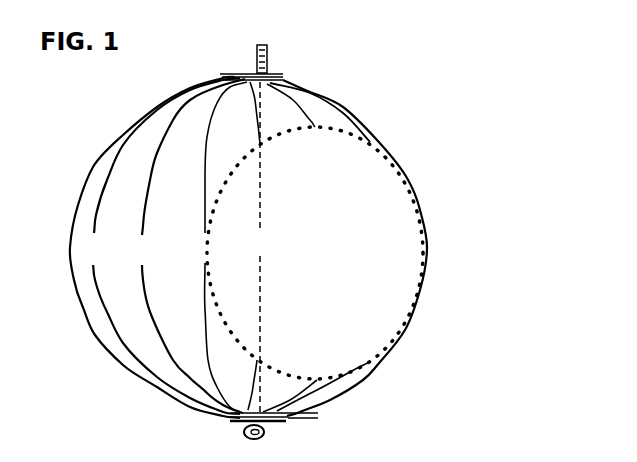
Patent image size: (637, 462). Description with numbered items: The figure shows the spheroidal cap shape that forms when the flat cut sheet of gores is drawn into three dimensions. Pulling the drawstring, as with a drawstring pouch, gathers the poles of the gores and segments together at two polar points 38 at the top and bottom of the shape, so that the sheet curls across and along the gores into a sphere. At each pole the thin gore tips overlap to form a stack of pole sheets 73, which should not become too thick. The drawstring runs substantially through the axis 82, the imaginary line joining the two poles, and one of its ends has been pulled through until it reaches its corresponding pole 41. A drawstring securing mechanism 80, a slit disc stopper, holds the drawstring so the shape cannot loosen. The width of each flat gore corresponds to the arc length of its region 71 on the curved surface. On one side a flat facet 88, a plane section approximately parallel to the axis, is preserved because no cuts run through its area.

The polar points 38 is at (270, 74).
The arc length of corresponding region 71 is at (205, 235).
The stack of pole sheets 73 is at (318, 418).
The drawstring securing mechanism 80 is at (233, 423).
The drawstring end at corresponding pole 41 is at (244, 431).
The axis 82 is at (260, 247).
The facet 88 is at (315, 253).